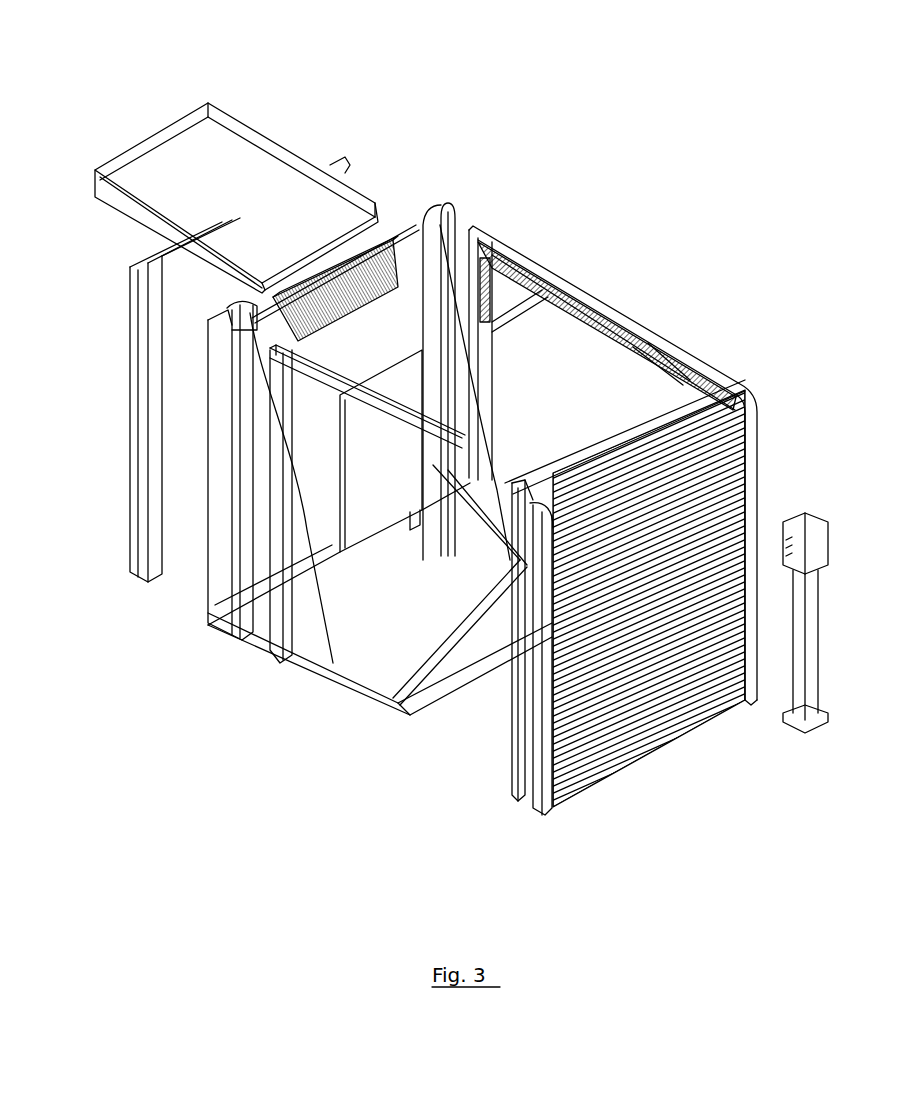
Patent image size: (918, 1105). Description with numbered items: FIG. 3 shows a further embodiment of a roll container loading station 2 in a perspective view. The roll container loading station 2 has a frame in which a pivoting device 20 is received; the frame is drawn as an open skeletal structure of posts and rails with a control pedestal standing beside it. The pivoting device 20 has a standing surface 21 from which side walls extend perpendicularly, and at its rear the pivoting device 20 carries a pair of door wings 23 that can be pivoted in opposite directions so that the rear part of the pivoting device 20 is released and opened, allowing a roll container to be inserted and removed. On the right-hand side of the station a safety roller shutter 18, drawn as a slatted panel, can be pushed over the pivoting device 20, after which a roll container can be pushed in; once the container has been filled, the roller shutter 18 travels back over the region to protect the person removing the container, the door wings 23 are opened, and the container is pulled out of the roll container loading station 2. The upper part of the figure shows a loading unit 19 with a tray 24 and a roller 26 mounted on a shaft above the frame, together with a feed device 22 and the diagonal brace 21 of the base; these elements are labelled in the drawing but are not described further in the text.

The roll container loading station 2 is at (535, 122).
The safety roller shutter 18 is at (663, 703).
The loading unit 19 is at (149, 118).
The pivoting device 20 is at (329, 692).
The standing surface 21 is at (426, 720).
The feed device 22 is at (387, 343).
The door wings 23 is at (407, 390).
The tray 24 is at (267, 177).
The roller 26 is at (297, 298).